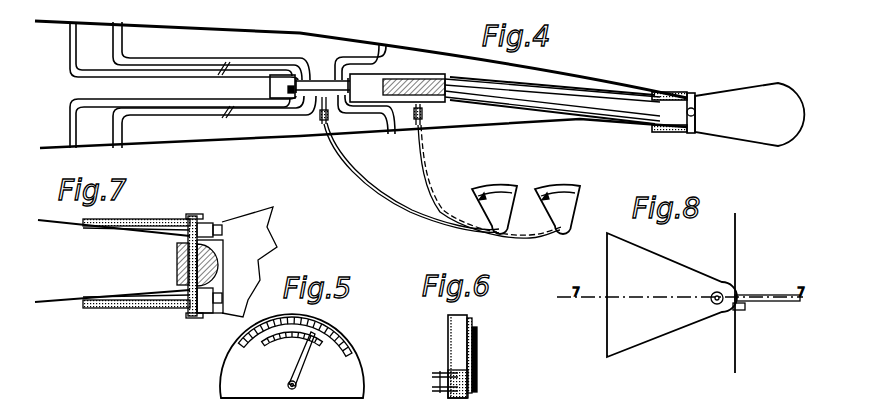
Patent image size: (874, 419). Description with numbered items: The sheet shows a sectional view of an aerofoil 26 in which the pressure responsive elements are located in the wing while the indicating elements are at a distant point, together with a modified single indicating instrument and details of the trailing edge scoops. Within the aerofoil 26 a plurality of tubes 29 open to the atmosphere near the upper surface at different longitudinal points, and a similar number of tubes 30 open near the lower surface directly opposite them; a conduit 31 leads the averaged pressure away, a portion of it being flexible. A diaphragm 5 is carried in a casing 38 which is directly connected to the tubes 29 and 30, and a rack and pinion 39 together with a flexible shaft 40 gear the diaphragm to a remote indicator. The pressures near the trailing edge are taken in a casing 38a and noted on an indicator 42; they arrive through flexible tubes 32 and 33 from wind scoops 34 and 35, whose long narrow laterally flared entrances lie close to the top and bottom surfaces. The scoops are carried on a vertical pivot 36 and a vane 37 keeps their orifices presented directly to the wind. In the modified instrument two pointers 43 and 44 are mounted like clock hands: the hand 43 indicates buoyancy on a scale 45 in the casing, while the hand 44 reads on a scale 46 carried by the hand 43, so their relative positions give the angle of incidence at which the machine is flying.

In FIG. 4, the diaphragm 5 is at (288, 90).
In FIG. 4, the aerofoil 26 is at (361, 81).
In FIG. 7, the aerofoil 26 is at (112, 261).
In FIG. 8, the aerofoil 26 is at (730, 250).
In FIG. 4, the tubes 29 is at (389, 66).
In FIG. 4, the tubes 30 is at (392, 117).
In FIG. 4, the conduit 31 is at (416, 4).
In FIG. 4, the flexible tube 32 is at (613, 96).
In FIG. 7, the flexible tube 32 is at (223, 230).
In FIG. 8, the flexible tube 32 is at (745, 308).
In FIG. 4, the flexible tube 33 is at (621, 118).
In FIG. 7, the flexible tube 33 is at (223, 298).
In FIG. 4, the wind scoop 34 is at (680, 92).
In FIG. 7, the wind scoop 34 is at (168, 220).
In FIG. 8, the wind scoop 34 is at (672, 295).
In FIG. 4, the wind scoop 35 is at (678, 128).
In FIG. 7, the wind scoop 35 is at (170, 309).
In FIG. 4, the vertical pivot 36 is at (692, 133).
In FIG. 7, the vertical pivot 36 is at (215, 256).
In FIG. 8, the vertical pivot 36 is at (711, 303).
In FIG. 4, the vane 37 is at (749, 114).
In FIG. 7, the vane 37 is at (265, 208).
In FIG. 8, the vane 37 is at (767, 290).
In FIG. 4, the casing 38 is at (288, 80).
In FIG. 4, the casing 38a is at (438, 80).
In FIG. 4, the rack and pinion 39 is at (320, 118).
In FIG. 4, the flexible shaft 40 is at (356, 181).
In FIG. 4, the indicator 42 is at (494, 209).
In FIG. 5, the pointer 43 is at (308, 351).
In FIG. 6, the pointer 43 is at (473, 327).
In FIG. 4, the pointer 44 is at (557, 209).
In FIG. 5, the pointer 44 is at (298, 357).
In FIG. 6, the pointer 44 is at (478, 352).
In FIG. 5, the scale 45 is at (340, 338).
In FIG. 6, the scale 45 is at (468, 317).
In FIG. 5, the scale 46 is at (262, 343).
In FIG. 6, the scale 46 is at (478, 336).